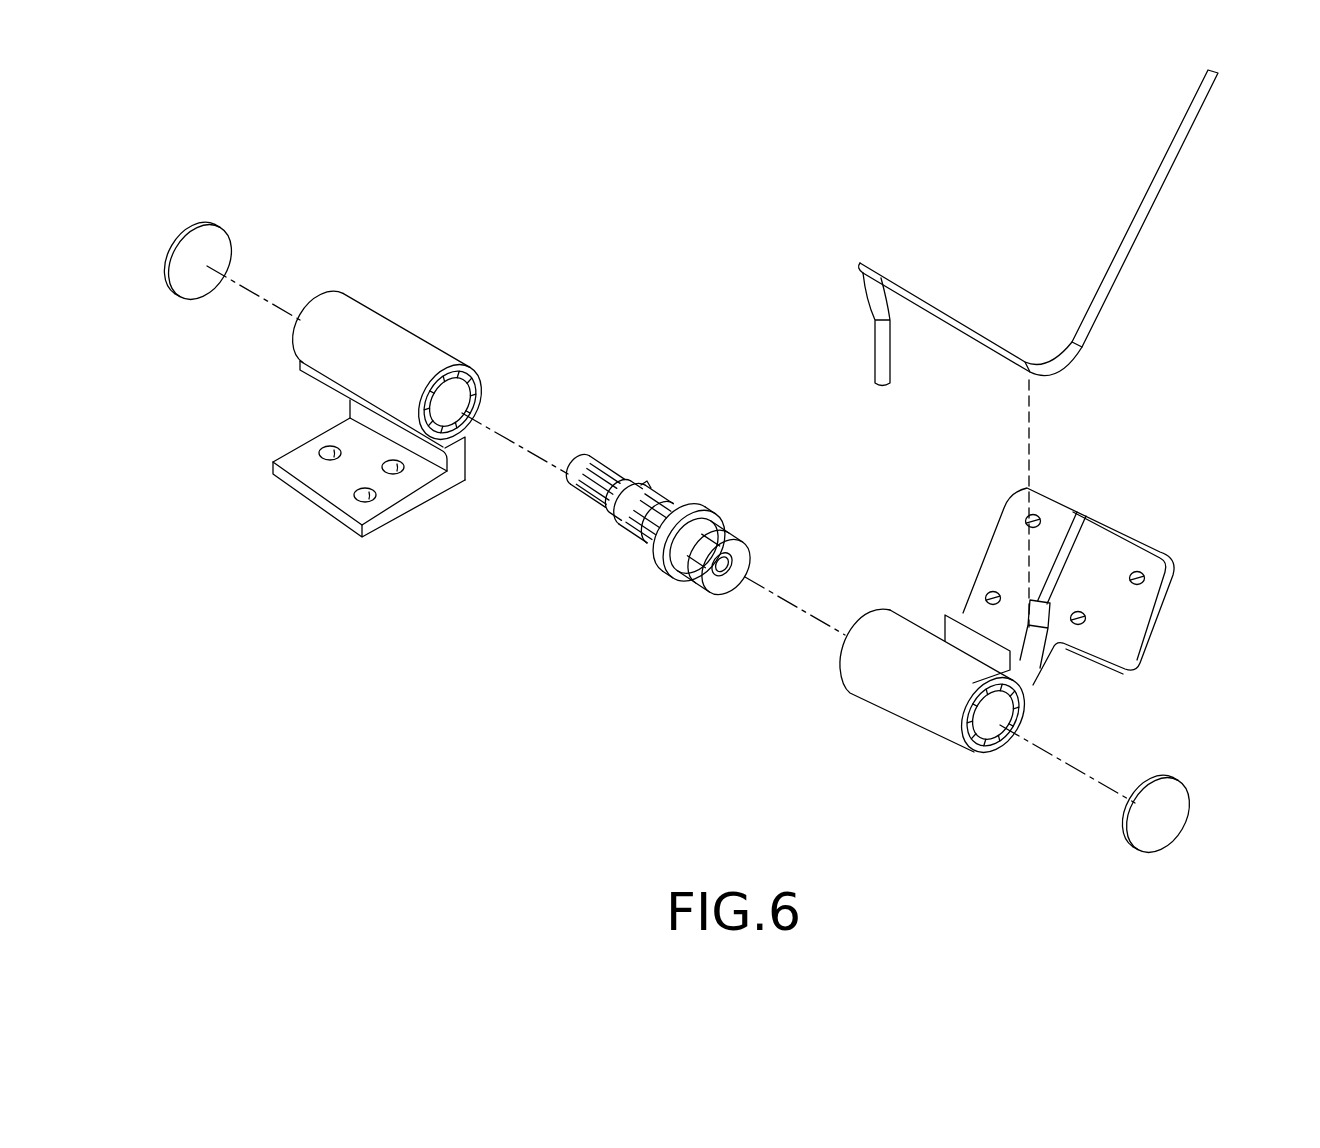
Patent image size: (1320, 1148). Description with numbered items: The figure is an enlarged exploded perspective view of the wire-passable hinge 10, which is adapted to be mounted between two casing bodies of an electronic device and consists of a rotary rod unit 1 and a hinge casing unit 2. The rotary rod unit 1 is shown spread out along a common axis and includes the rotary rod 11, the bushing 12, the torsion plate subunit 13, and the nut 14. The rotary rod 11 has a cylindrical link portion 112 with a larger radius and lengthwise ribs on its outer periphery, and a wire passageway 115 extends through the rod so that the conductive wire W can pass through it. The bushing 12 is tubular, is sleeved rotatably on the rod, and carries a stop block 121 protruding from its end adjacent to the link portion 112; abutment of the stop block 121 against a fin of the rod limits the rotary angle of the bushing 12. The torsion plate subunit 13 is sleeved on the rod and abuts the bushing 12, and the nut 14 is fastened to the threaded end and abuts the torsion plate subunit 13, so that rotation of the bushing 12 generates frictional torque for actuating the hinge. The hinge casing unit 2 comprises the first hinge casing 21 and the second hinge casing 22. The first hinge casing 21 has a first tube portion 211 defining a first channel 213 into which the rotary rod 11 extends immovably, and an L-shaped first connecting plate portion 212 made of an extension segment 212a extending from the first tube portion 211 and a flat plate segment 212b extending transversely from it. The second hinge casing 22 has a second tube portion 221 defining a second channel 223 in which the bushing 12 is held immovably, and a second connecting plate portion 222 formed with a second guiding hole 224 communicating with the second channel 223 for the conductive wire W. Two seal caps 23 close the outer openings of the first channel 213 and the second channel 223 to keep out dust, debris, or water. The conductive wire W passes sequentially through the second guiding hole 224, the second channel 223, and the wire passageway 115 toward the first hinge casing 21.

The wire-passable hinge 10 is at (611, 296).
The rotary rod unit 1 is at (625, 602).
The rotary rod 11 is at (587, 450).
The link portion 112 is at (592, 519).
The bushing 12 is at (677, 480).
The stop block 121 is at (643, 485).
The torsion plate subunit 13 is at (710, 518).
The nut 14 is at (740, 545).
The wire passageway 115 is at (722, 578).
The first hinge casing 21 is at (396, 525).
The first tube portion 211 is at (385, 333).
The first connecting plate portion 212 is at (307, 505).
The extension segment 212a is at (462, 450).
The flat plate segment 212b is at (302, 457).
The first channel 213 is at (453, 396).
The hinge casing unit 2 is at (927, 759).
The second hinge casing 22 is at (887, 597).
The second tube portion 221 is at (893, 690).
The second connecting plate portion 222 is at (1132, 528).
The second channel 223 is at (978, 728).
The second guiding hole 224 is at (1077, 512).
The seal cap 23 is at (182, 243).
The conductive wire W is at (1139, 204).